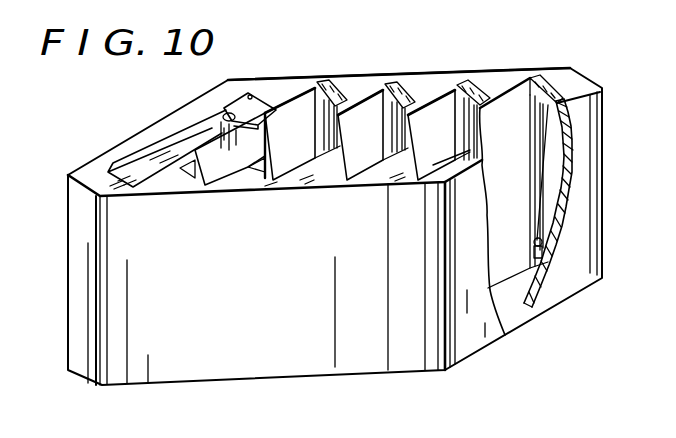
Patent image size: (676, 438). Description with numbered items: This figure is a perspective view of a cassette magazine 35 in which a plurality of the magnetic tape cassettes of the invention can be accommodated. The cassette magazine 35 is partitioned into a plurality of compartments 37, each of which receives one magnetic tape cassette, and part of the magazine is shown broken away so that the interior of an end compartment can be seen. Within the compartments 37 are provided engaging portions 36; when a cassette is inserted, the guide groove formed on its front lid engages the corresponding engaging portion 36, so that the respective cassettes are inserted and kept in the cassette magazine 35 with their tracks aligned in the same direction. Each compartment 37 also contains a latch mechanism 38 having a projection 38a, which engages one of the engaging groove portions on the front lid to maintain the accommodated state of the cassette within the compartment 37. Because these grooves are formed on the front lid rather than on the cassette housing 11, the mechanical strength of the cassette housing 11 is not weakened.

The cassette housing 11 is at (170, 147).
The cassette magazine 35 is at (556, 41).
The engaging portion 36 is at (320, 97).
The compartment 37 is at (372, 113).
The latch mechanism 38 is at (568, 168).
The projection 38a is at (542, 240).